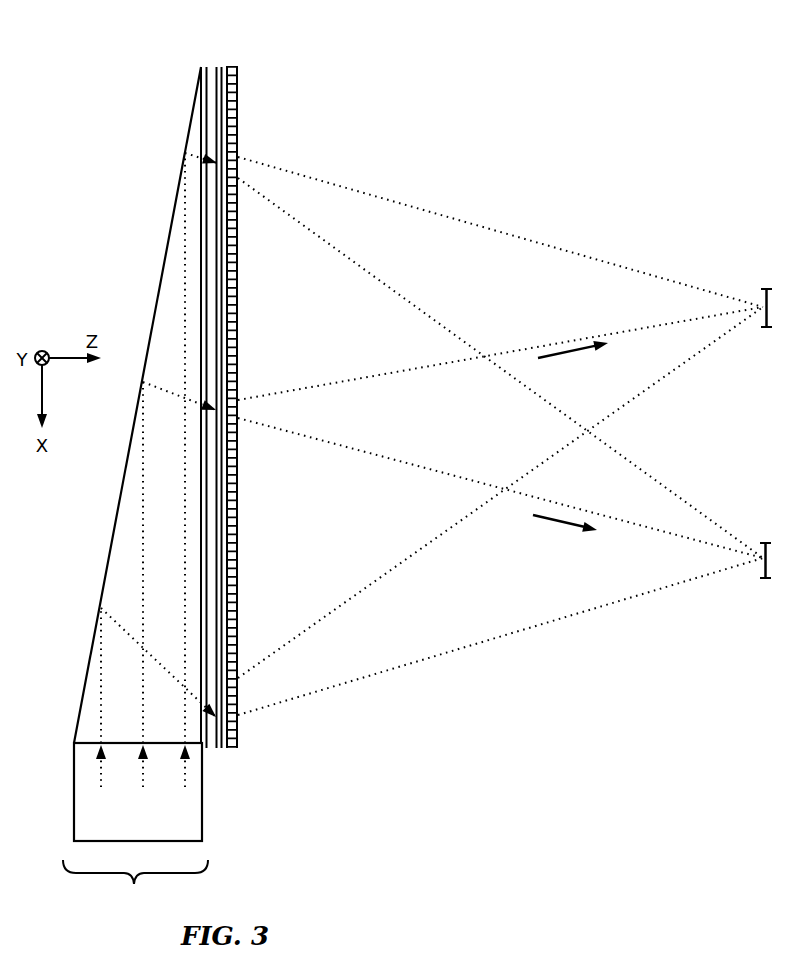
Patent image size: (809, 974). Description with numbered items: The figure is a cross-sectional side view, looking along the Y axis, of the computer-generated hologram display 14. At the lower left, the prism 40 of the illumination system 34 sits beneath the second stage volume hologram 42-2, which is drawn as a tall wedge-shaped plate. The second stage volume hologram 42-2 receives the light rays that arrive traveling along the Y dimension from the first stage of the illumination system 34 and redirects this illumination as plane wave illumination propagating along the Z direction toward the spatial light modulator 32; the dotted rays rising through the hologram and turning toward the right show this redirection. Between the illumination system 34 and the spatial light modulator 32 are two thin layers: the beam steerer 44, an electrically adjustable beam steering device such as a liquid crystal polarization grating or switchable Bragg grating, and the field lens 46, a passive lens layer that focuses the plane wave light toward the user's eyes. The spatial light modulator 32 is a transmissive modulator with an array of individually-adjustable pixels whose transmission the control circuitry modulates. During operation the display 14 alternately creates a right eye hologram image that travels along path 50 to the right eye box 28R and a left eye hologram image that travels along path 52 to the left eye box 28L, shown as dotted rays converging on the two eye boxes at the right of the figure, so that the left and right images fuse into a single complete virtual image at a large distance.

The display 14 is at (162, 421).
The second stage volume hologram 42-2 is at (107, 571).
The beam steerer 44 is at (215, 66).
The field lens 46 is at (221, 66).
The spatial light modulator 32 is at (238, 65).
The prism 40 is at (74, 780).
The illumination system 34 is at (135, 884).
The right eye box 28R is at (766, 289).
The left eye box 28L is at (766, 578).
The path 50 is at (562, 355).
The path 52 is at (562, 523).